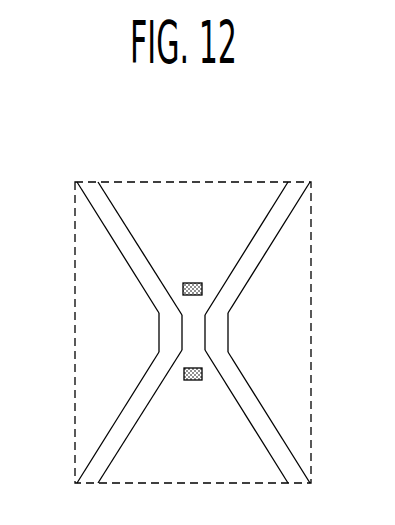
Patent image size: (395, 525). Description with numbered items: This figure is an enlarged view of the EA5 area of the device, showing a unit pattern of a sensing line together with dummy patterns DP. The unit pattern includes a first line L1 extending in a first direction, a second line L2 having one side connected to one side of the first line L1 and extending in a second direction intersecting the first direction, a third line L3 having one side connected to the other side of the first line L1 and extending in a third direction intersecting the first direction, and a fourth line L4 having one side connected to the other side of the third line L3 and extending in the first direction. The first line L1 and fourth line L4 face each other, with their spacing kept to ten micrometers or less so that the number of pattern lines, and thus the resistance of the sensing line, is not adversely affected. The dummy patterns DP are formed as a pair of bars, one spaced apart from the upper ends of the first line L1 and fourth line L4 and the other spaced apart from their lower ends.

The EA5 area EA5 is at (238, 172).
The first line L1 is at (222, 327).
The second line L2 is at (258, 257).
The third line L3 is at (130, 257).
The fourth line L4 is at (165, 327).
The dummy patterns DP is at (195, 283).